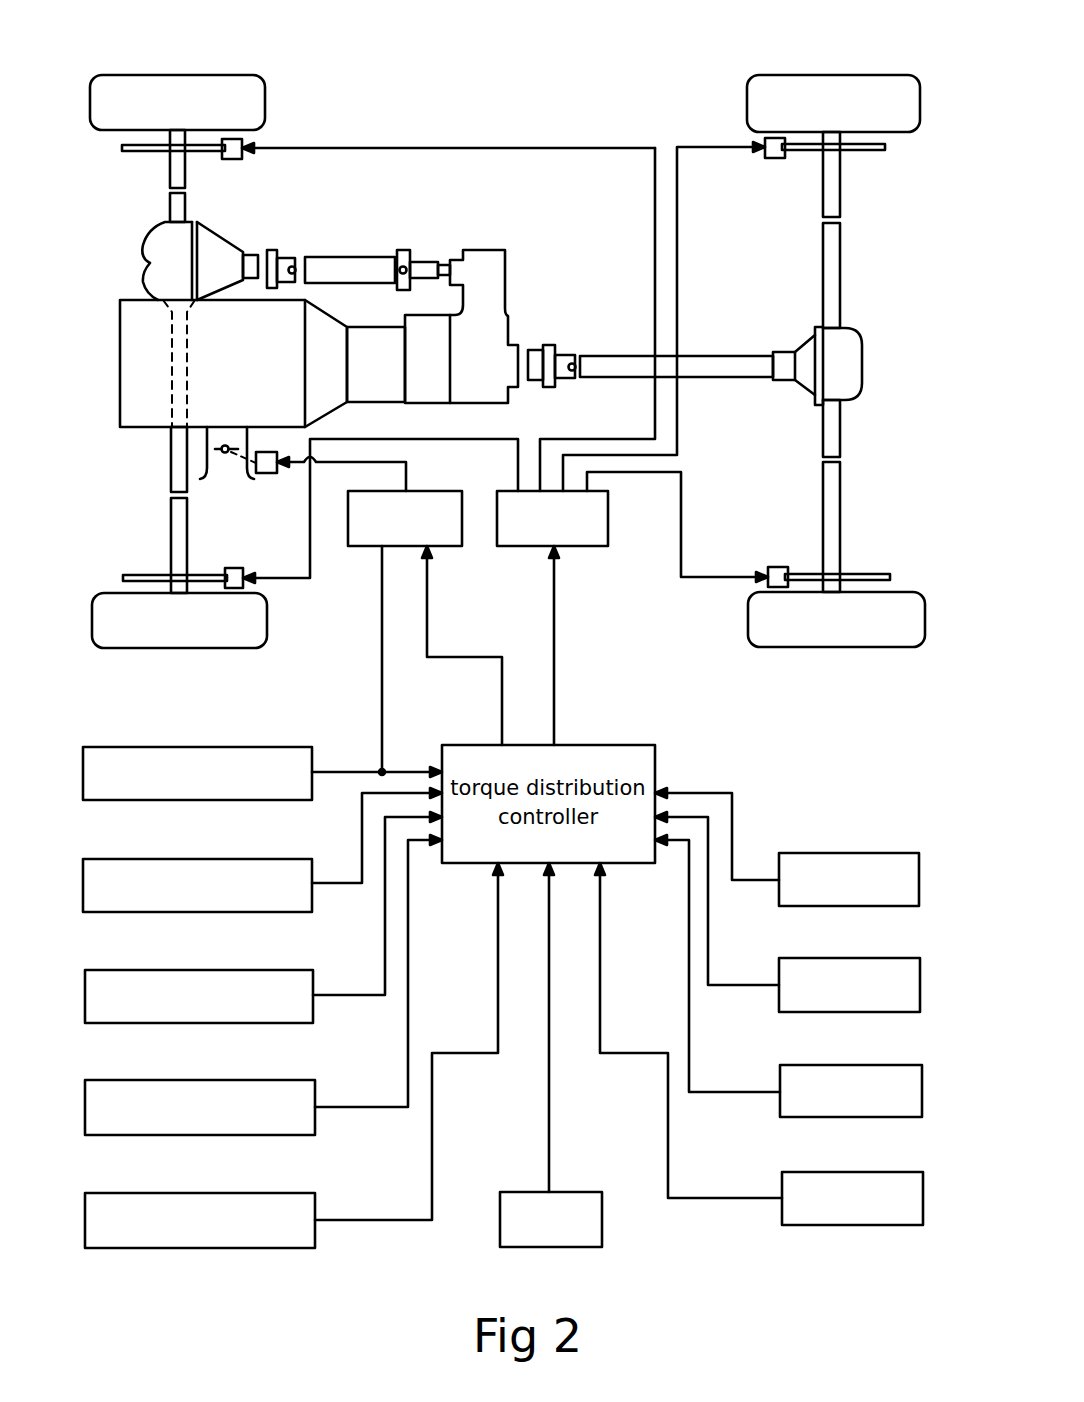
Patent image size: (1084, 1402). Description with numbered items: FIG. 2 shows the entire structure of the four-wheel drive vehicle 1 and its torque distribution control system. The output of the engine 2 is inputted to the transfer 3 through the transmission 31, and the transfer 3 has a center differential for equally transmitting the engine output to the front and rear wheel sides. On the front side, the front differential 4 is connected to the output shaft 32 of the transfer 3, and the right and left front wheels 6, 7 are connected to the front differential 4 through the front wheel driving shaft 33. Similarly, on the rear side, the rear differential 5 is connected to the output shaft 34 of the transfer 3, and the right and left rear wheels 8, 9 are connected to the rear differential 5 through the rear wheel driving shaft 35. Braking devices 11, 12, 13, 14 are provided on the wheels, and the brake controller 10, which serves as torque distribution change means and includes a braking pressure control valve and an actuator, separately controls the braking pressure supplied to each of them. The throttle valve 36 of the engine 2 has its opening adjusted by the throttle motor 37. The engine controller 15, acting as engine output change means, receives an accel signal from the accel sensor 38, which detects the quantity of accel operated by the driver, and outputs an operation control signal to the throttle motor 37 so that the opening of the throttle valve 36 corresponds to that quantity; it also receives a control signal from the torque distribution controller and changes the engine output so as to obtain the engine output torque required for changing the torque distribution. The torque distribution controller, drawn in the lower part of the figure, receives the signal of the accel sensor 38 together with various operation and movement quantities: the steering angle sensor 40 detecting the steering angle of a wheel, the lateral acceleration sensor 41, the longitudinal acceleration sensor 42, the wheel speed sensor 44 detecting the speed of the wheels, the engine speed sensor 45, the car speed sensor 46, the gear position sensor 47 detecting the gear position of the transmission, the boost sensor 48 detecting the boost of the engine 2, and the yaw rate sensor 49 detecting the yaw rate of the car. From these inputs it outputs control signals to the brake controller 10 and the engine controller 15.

The four-wheel drive vehicle 1 is at (454, 72).
The engine 2 is at (129, 392).
The transfer 3 is at (498, 326).
The front differential 4 is at (157, 243).
The rear differential 5 is at (852, 358).
The front wheel 6 is at (125, 648).
The front wheel 7 is at (137, 87).
The rear wheel 8 is at (885, 648).
The rear wheel 9 is at (879, 87).
The brake controller 10 is at (584, 547).
The braking device 11 is at (247, 588).
The braking device 12 is at (247, 138).
The braking device 13 is at (779, 567).
The braking device 14 is at (772, 158).
The engine controller 15 is at (443, 547).
The transmission 31 is at (363, 338).
The output shaft 32 is at (357, 263).
The front wheel driving shaft 33 is at (186, 206).
The output shaft 34 is at (740, 360).
The rear wheel driving shaft 35 is at (837, 268).
The throttle valve 36 is at (222, 463).
The throttle motor 37 is at (265, 474).
The accel sensor 38 is at (213, 747).
The steering angle sensor 40 is at (213, 859).
The lateral acceleration sensor 41 is at (213, 970).
The longitudinal acceleration sensor 42 is at (215, 1080).
The wheel speed sensor 44 is at (847, 853).
The engine speed sensor 45 is at (847, 958).
The car speed sensor 46 is at (847, 1065).
The gear position sensor 47 is at (847, 1172).
The boost sensor 48 is at (215, 1193).
The yaw rate sensor 49 is at (572, 1192).